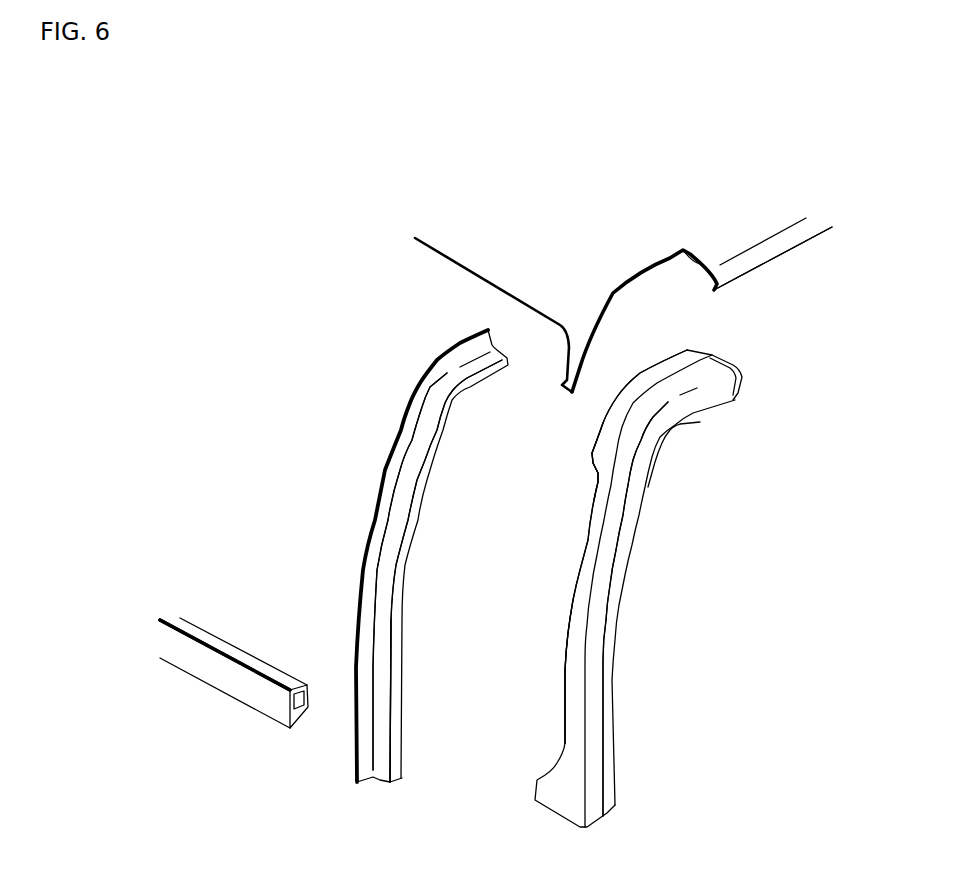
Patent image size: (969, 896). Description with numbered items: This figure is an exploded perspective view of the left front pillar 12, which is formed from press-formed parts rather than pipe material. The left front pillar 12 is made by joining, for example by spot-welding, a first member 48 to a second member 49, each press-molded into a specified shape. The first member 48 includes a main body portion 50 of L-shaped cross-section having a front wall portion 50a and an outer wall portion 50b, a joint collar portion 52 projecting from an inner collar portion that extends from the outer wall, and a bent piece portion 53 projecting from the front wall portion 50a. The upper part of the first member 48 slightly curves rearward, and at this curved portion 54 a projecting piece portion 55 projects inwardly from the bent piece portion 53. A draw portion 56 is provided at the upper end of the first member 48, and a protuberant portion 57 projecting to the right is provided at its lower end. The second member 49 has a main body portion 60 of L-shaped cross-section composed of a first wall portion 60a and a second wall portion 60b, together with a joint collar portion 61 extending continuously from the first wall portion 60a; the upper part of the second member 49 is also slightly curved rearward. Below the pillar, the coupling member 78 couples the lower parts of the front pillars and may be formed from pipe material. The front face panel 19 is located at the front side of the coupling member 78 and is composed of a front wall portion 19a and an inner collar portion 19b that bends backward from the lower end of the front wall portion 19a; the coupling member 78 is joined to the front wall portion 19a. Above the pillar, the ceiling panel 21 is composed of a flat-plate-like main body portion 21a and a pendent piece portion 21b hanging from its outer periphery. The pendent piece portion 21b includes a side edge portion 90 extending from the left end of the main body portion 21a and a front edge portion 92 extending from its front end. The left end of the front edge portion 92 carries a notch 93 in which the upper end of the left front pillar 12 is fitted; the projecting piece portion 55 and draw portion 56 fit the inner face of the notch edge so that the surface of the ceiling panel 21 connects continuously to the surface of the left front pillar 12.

The left front pillar 12 is at (688, 612).
The front face panel 19 is at (244, 687).
The front wall portion 19a is at (188, 662).
The inner collar portion 19b is at (297, 725).
The ceiling panel 21 is at (638, 264).
The main body portion 21a is at (667, 264).
The pendent piece portion 21b is at (793, 248).
The first member 48 is at (654, 603).
The second member 49 is at (392, 556).
The main body portion 50 is at (591, 537).
The front wall portion 50a is at (582, 598).
The outer wall portion 50b is at (598, 662).
The joint collar portion 52 is at (610, 757).
The bent piece portion 53 is at (562, 672).
The curved portion 54 is at (682, 405).
The projecting piece portion 55 is at (605, 430).
The draw portion 56 is at (743, 387).
The protuberant portion 57 is at (553, 792).
The main body portion 60 is at (398, 520).
The first wall portion 60a is at (385, 620).
The second wall portion 60b is at (372, 567).
The joint collar portion 61 is at (398, 727).
The coupling member 78 is at (221, 638).
The side edge portion 90 is at (760, 266).
The front edge portion 92 is at (460, 250).
The notch 93 is at (670, 257).